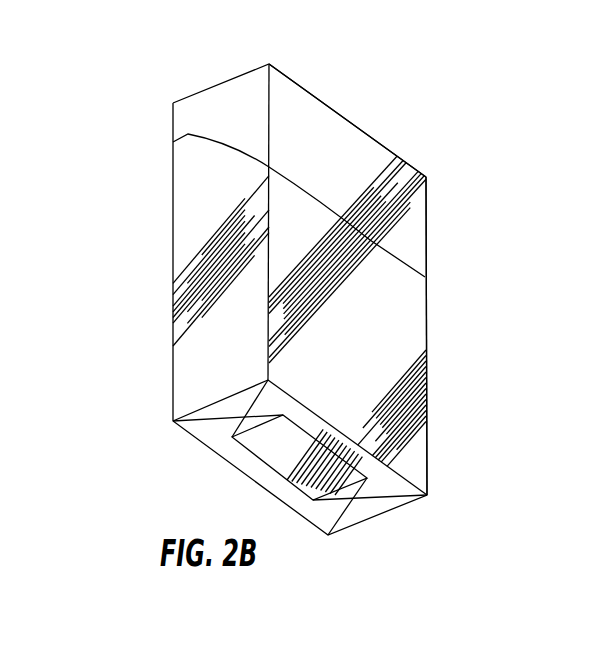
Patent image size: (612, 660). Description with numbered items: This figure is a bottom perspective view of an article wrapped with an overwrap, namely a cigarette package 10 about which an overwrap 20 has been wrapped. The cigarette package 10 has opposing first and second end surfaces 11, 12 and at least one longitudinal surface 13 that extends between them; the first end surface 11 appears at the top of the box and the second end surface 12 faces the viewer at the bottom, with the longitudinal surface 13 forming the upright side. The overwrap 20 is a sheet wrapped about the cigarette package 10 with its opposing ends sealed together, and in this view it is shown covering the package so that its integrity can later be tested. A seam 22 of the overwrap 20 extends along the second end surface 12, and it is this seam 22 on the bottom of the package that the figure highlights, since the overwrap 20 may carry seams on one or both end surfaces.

The cigarette package 10 is at (152, 208).
The first end surface 11 is at (340, 105).
The second end surface 12 is at (382, 485).
The longitudinal surface 13 is at (440, 320).
The overwrap 20 is at (403, 288).
The seam 22 is at (354, 512).